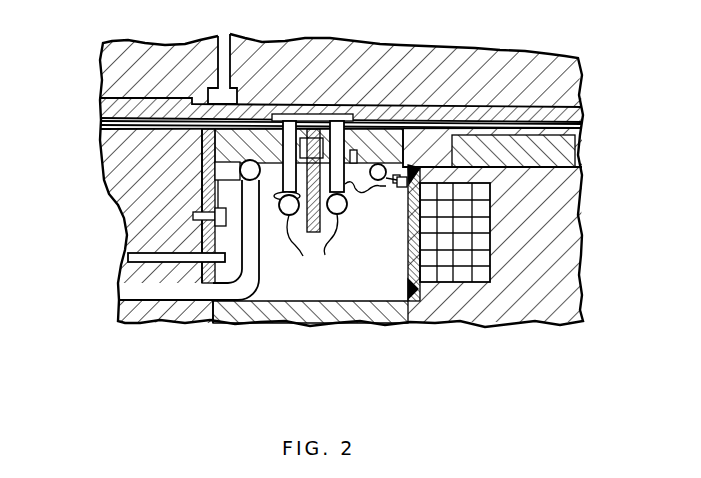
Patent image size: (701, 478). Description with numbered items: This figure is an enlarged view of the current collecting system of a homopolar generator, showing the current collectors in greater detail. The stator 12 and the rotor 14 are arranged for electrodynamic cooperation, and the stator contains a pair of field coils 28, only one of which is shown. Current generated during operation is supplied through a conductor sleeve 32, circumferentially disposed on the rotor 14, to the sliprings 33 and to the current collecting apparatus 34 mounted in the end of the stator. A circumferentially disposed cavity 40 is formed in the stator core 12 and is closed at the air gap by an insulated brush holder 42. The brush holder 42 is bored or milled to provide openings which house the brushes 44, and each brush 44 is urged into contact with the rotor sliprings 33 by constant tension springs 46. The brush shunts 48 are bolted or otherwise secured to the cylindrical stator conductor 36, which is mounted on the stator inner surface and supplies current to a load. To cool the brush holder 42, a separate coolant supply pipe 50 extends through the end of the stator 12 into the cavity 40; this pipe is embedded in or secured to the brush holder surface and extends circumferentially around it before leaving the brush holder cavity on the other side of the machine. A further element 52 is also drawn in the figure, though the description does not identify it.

The stator 12 is at (157, 323).
The rotor 14 is at (101, 68).
The field coils 28 is at (480, 224).
The conductor sleeve 32 is at (423, 112).
The sliprings 33 is at (324, 128).
The current collecting apparatus 34 is at (338, 231).
The cylindrical conductors 36 is at (565, 132).
The cavity 40 is at (293, 322).
The brush holder 42 is at (217, 146).
The brushes 44 is at (290, 121).
The constant tension springs 46 is at (313, 233).
The brush shunts 48 is at (365, 195).
The coolant supply pipes 50 is at (125, 292).
The actuating rod 52 is at (128, 256).